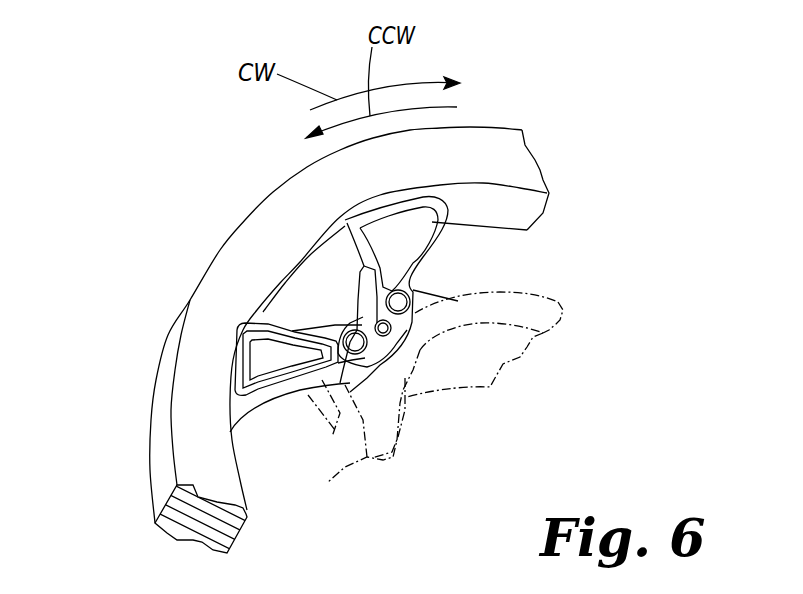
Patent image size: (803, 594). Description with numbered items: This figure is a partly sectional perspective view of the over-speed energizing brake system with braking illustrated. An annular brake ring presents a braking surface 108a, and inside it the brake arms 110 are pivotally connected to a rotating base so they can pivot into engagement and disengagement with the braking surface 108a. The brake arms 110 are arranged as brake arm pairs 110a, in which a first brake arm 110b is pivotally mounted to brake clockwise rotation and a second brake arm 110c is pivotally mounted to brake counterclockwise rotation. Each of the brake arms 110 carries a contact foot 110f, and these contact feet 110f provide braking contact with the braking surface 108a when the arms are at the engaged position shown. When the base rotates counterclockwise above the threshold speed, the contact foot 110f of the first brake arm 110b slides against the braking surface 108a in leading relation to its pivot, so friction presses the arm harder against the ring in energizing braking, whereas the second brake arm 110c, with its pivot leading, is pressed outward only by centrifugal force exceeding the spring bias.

The braking surface 108a is at (482, 198).
The brake arms 110 is at (316, 312).
The brake arm pairs 110a is at (328, 284).
The first brake arm 110b is at (286, 397).
The second brake arm 110c is at (415, 267).
The contact foot 110f is at (390, 207).